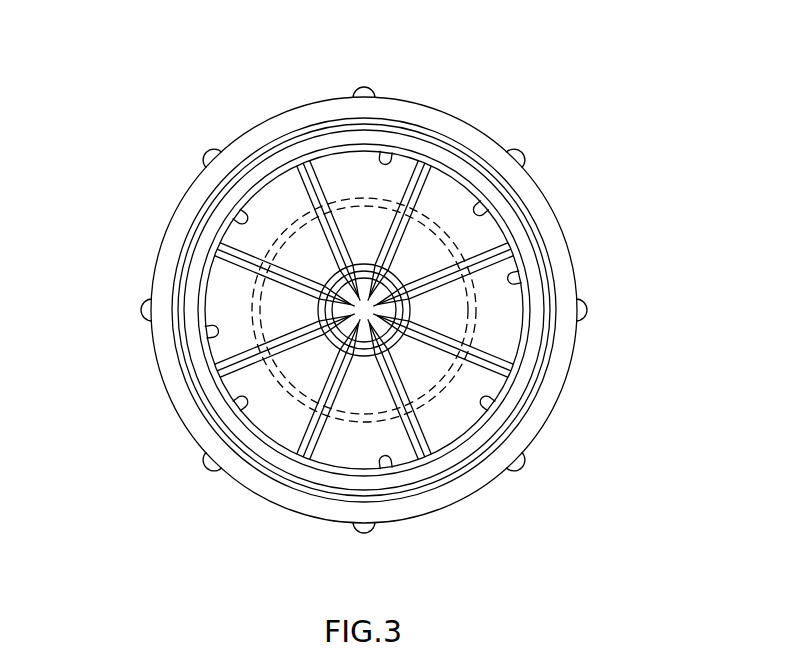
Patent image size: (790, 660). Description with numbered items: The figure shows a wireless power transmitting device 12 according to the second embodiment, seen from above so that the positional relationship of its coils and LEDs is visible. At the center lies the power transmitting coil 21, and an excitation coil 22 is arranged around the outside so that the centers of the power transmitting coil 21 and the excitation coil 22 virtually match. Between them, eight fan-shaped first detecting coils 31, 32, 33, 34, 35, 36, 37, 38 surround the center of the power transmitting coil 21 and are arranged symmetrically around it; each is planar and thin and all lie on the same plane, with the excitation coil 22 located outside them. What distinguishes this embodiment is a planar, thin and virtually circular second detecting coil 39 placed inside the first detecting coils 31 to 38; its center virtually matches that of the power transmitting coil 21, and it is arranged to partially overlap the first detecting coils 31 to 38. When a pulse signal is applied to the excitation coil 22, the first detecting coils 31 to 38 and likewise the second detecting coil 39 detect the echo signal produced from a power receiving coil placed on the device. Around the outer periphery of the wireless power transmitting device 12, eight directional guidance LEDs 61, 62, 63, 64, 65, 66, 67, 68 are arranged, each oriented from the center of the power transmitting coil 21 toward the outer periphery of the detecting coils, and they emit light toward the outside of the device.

The wireless power transmitting device 12 is at (534, 102).
The power transmitting coil 21 is at (478, 330).
The excitation coil 22 is at (548, 384).
The detecting coil 31 is at (388, 155).
The detecting coil 32 is at (478, 212).
The detecting coil 33 is at (516, 278).
The detecting coil 34 is at (487, 403).
The detecting coil 35 is at (385, 458).
The detecting coil 36 is at (240, 405).
The detecting coil 37 is at (212, 332).
The detecting coil 38 is at (240, 218).
The second detecting coil 39 is at (408, 345).
The directional guidance LED 61 is at (357, 532).
The directional guidance LED 62 is at (210, 470).
The directional guidance LED 63 is at (143, 310).
The directional guidance LED 64 is at (208, 150).
The directional guidance LED 65 is at (372, 90).
The directional guidance LED 66 is at (520, 150).
The directional guidance LED 67 is at (585, 310).
The directional guidance LED 68 is at (520, 470).